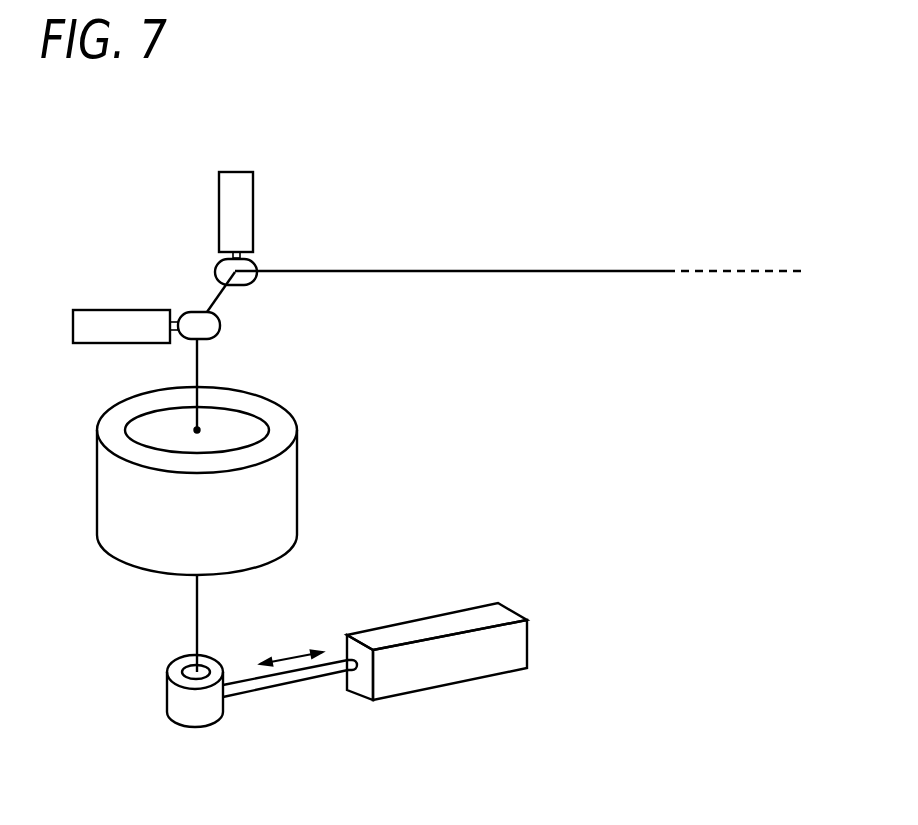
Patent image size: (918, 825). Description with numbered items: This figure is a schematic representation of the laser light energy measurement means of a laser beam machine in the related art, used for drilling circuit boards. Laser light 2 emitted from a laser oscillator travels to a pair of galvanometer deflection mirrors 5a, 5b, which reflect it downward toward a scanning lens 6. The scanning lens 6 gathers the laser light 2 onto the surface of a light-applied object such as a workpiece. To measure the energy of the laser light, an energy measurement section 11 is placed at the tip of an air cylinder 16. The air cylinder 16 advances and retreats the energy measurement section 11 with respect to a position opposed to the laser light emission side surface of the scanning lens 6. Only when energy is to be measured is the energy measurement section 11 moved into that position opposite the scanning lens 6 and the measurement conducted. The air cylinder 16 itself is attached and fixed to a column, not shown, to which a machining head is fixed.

The laser light 2 is at (560, 270).
The galvanometer deflection mirror 5a is at (242, 212).
The galvanometer deflection mirror 5b is at (120, 320).
The scanning lens 6 is at (278, 492).
The energy measurement section 11 is at (188, 713).
The air cylinder 16 is at (450, 667).